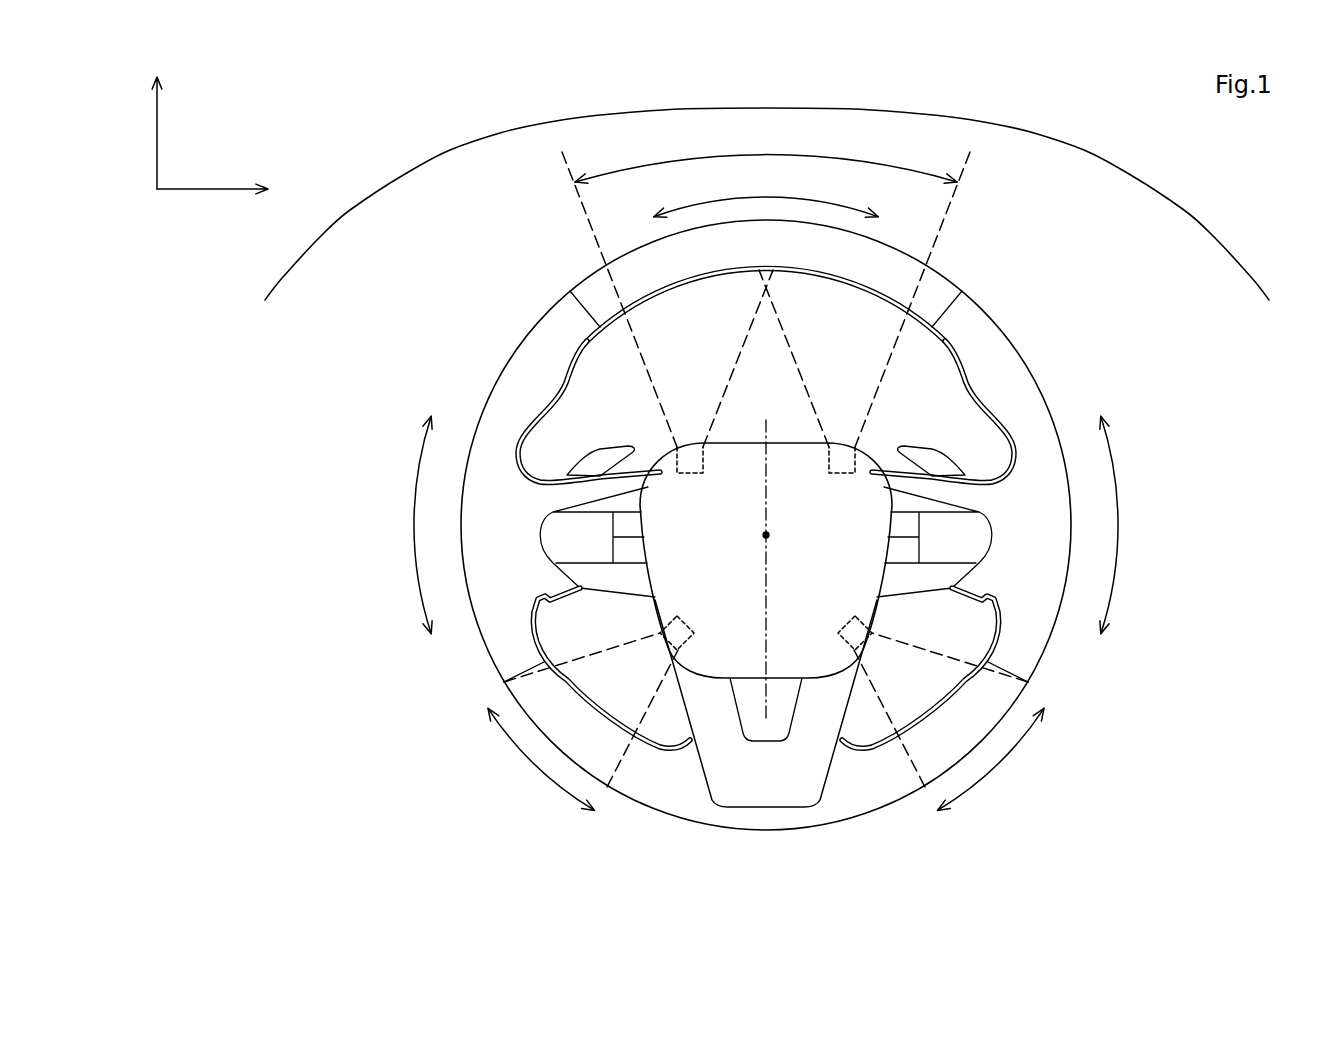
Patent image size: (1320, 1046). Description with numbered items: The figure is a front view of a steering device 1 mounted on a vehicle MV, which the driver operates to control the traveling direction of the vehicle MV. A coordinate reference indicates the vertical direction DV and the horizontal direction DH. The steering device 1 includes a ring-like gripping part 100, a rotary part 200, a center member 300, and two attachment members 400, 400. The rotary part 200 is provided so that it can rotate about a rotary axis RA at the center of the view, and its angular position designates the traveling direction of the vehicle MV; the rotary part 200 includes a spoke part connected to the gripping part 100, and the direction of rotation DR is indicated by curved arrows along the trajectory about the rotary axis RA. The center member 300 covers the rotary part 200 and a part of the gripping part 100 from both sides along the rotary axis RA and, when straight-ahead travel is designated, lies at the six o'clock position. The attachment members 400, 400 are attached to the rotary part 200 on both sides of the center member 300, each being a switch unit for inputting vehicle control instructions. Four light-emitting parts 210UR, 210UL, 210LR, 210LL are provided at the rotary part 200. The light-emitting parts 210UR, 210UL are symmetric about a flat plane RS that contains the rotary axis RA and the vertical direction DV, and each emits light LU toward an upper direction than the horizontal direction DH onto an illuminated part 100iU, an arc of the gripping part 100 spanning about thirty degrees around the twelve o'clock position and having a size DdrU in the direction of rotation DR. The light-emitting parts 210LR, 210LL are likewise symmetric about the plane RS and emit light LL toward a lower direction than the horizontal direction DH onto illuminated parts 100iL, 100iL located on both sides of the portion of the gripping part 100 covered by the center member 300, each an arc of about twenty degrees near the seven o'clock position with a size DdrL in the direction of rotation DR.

The steering device 1 is at (508, 213).
The gripping part 100 is at (987, 336).
The illuminated part 100iU is at (870, 273).
The illuminated part 100iL is at (598, 752).
The rotary part 200 is at (784, 468).
The center member 300 is at (731, 467).
The attachment member 400 is at (617, 577).
The light-emitting part 210UL is at (694, 480).
The light-emitting part 210UR is at (838, 480).
The light-emitting part 210LL is at (723, 601).
The light-emitting part 210LR is at (838, 622).
The rotary axis RA is at (769, 536).
The flat plane RS is at (770, 654).
The light LU is at (665, 375).
The light LL is at (632, 715).
The direction of rotation DR is at (766, 402).
The size of illuminated part in direction of rotation DdrU is at (766, 155).
The size of illuminated part in direction of rotation DdrL is at (767, 759).
The vehicle MV is at (1062, 142).
The vertical direction DV is at (139, 133).
The horizontal direction DH is at (212, 204).